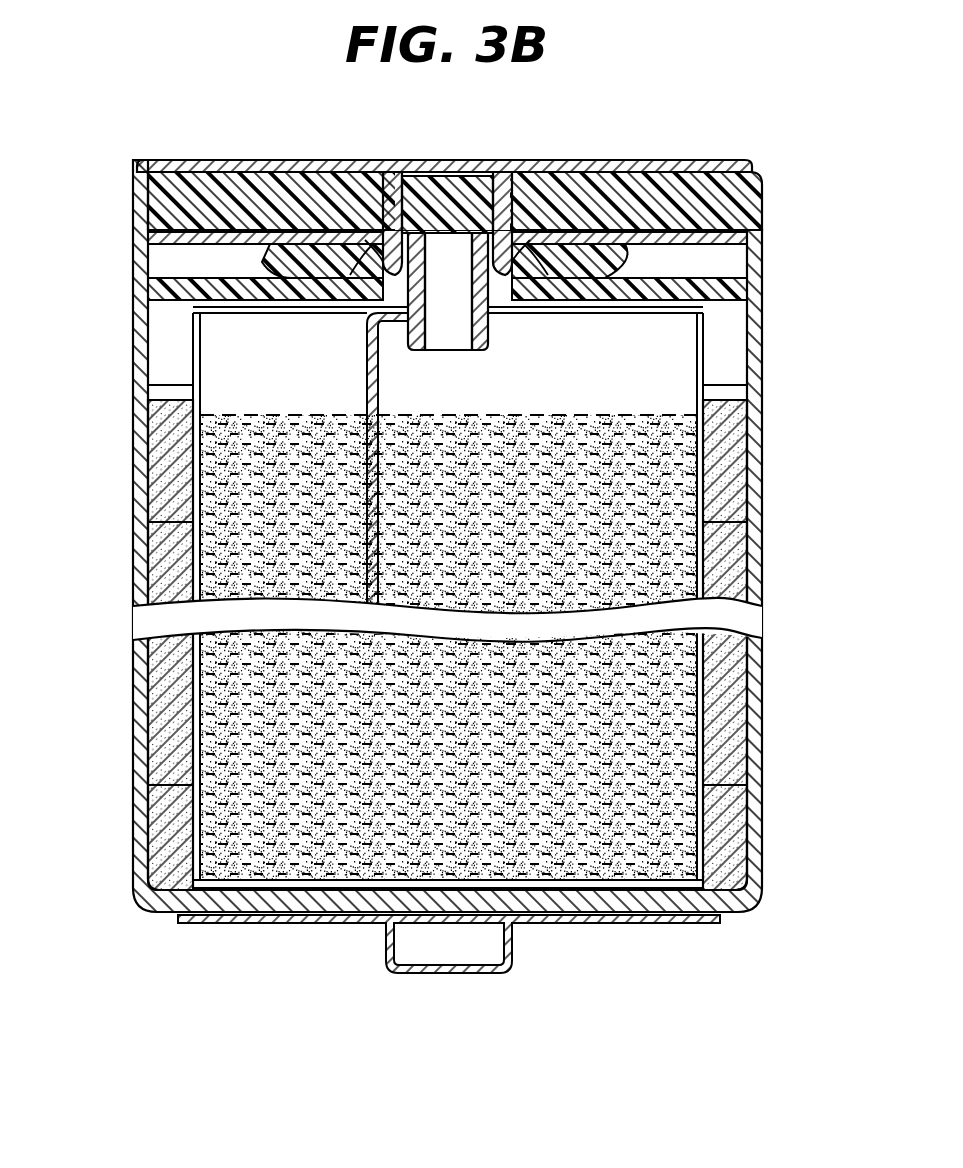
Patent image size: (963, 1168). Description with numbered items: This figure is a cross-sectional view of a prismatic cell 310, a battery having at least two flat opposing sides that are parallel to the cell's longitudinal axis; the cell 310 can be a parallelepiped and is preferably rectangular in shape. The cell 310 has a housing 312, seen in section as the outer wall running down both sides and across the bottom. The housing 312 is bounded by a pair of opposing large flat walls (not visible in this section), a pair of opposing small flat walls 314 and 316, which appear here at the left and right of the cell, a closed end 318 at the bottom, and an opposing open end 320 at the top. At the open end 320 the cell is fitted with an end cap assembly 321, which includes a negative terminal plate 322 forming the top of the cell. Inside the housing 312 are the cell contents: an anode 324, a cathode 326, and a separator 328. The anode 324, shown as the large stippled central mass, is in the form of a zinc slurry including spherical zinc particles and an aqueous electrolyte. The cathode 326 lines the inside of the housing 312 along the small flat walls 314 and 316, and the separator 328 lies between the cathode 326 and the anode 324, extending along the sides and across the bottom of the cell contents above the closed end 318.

The prismatic cell 310 is at (452, 510).
The housing 312 is at (150, 381).
The small flat wall 314 is at (150, 508).
The small flat wall 316 is at (765, 505).
The closed end 318 is at (142, 903).
The open end 320 is at (165, 262).
The end cap assembly 321 is at (770, 200).
The negative terminal plate 322 is at (220, 165).
The anode 324 is at (262, 878).
The cathode 326 is at (158, 768).
The separator 328 is at (210, 868).